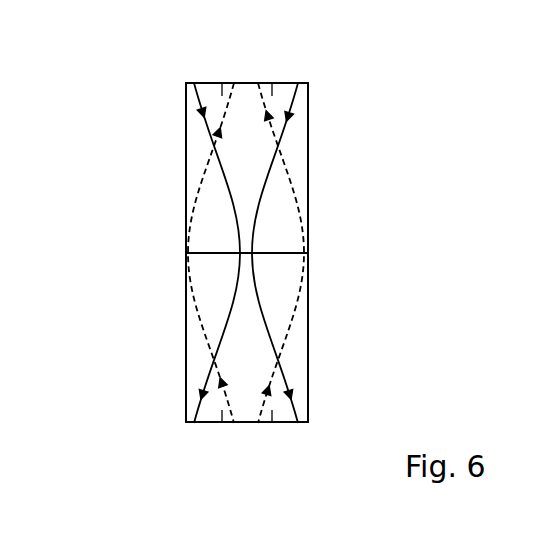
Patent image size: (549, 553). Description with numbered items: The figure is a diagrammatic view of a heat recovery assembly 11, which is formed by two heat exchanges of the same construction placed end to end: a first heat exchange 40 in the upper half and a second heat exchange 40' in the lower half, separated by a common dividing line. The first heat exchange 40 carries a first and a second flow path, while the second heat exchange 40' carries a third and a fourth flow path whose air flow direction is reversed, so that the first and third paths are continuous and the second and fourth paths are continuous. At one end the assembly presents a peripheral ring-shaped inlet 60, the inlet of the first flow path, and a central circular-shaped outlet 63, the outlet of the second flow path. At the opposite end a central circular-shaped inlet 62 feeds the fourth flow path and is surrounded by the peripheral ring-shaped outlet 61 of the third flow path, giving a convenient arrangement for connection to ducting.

The heat recovery assembly 11 is at (121, 240).
The first heat exchange 40 is at (286, 168).
The second heat exchange 40' is at (291, 332).
The peripheral ring-shaped inlet 60 is at (209, 75).
The peripheral ring-shaped outlet 61 is at (203, 432).
The central circular-shaped inlet 62 is at (249, 430).
The central circular-shaped outlet 63 is at (256, 75).